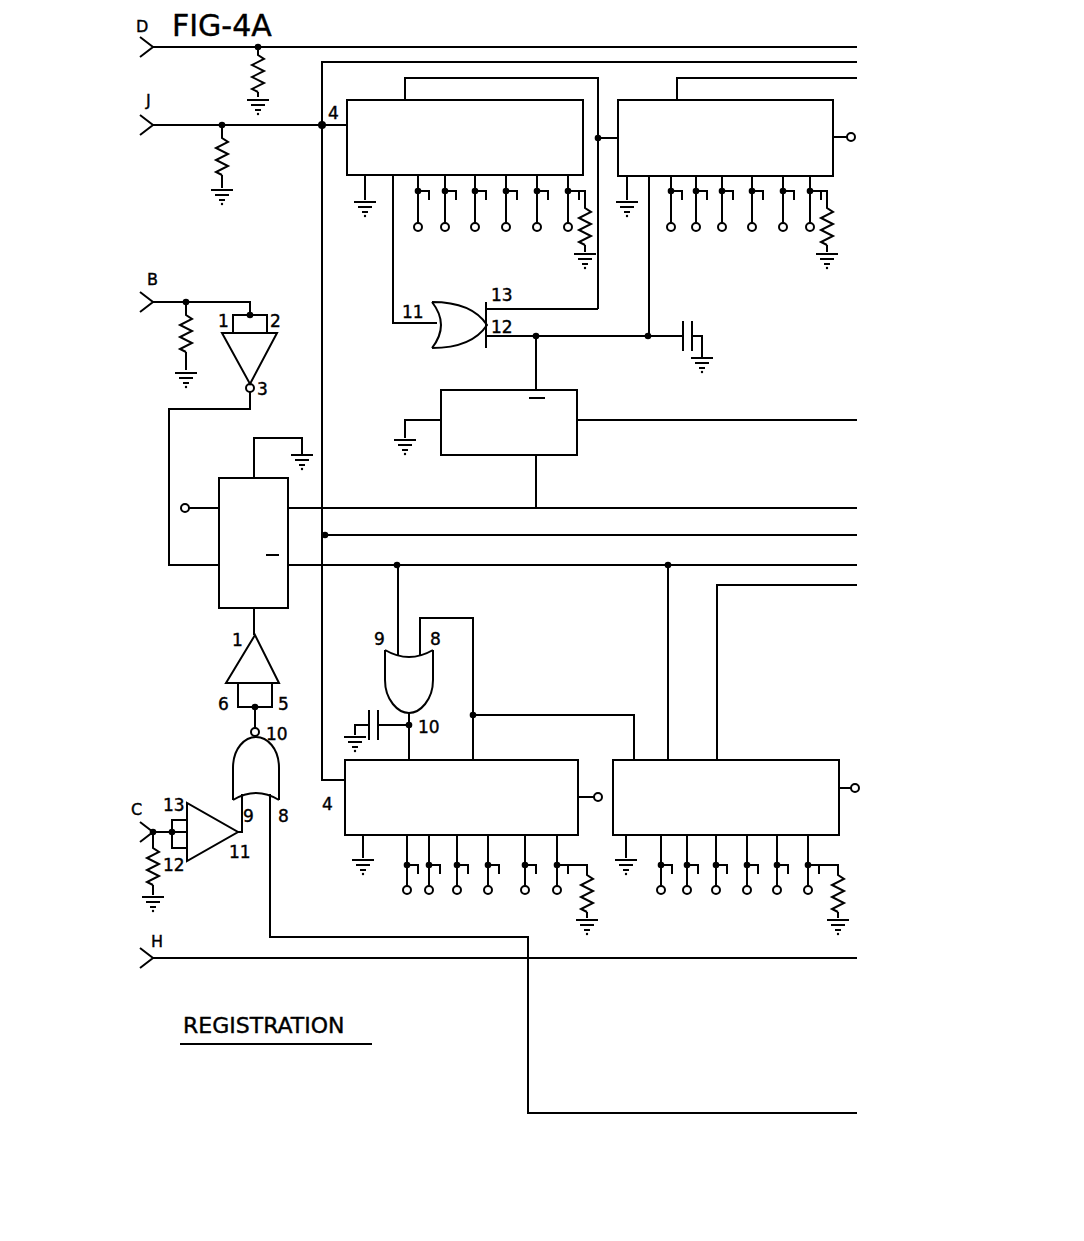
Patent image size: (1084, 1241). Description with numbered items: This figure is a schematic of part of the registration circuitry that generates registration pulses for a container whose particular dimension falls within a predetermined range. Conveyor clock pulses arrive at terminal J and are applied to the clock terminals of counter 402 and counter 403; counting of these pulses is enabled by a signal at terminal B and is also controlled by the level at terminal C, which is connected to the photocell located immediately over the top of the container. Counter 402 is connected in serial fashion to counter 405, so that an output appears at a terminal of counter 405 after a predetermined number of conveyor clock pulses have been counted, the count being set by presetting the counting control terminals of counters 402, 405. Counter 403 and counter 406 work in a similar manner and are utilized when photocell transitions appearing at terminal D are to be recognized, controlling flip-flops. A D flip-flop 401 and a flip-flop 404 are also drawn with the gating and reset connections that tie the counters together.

The D flip-flop 401 is at (226, 482).
The counter 402 is at (552, 775).
The counter 403 is at (530, 108).
The flip-flop 404 is at (578, 437).
The counter 405 is at (783, 775).
The counter 406 is at (768, 108).